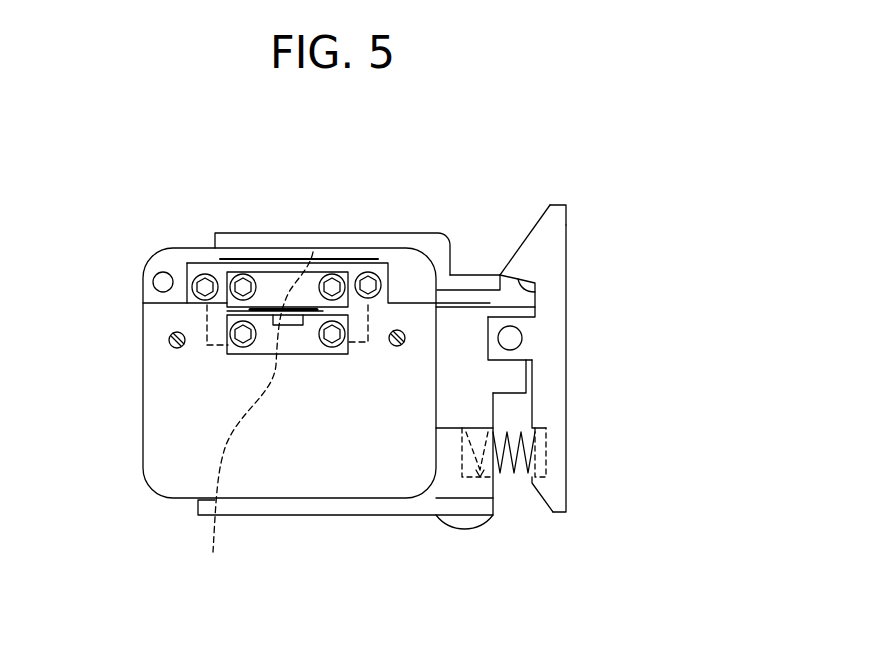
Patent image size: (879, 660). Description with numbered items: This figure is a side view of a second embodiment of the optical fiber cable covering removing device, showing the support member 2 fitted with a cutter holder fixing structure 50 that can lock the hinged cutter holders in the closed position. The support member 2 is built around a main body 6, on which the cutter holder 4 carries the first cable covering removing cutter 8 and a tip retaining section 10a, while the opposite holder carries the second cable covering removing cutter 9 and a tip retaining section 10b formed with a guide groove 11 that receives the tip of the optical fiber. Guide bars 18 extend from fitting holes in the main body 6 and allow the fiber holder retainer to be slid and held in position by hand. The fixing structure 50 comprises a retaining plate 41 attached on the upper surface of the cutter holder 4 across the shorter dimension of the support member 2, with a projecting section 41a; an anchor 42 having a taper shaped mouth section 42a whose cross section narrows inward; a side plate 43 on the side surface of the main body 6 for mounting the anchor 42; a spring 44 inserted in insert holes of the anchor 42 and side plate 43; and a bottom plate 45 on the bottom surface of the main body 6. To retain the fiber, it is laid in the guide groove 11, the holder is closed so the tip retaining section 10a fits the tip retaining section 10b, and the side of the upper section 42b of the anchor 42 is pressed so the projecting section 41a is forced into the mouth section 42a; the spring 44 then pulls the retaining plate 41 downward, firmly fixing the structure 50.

The support member 2 is at (141, 432).
The cutter holder 4 is at (167, 247).
The main body 6 is at (167, 468).
The first cable covering removing cutter 8 is at (264, 306).
The second cable covering removing cutter 9 is at (317, 309).
The tip retaining section 10a is at (313, 252).
The tip retaining section 10b is at (207, 322).
The guide groove 11 is at (256, 420).
The guide bar 18 is at (168, 340).
The retaining plate 41 is at (434, 231).
The projecting section 41a is at (479, 272).
The anchor 42 is at (566, 257).
The taper shaped mouth section 42a is at (530, 292).
The upper section 42b is at (566, 218).
The side plate 43 is at (516, 368).
The spring 44 is at (506, 465).
The bottom plate 45 is at (398, 516).
The cutter holder fixing structure 50 is at (377, 233).